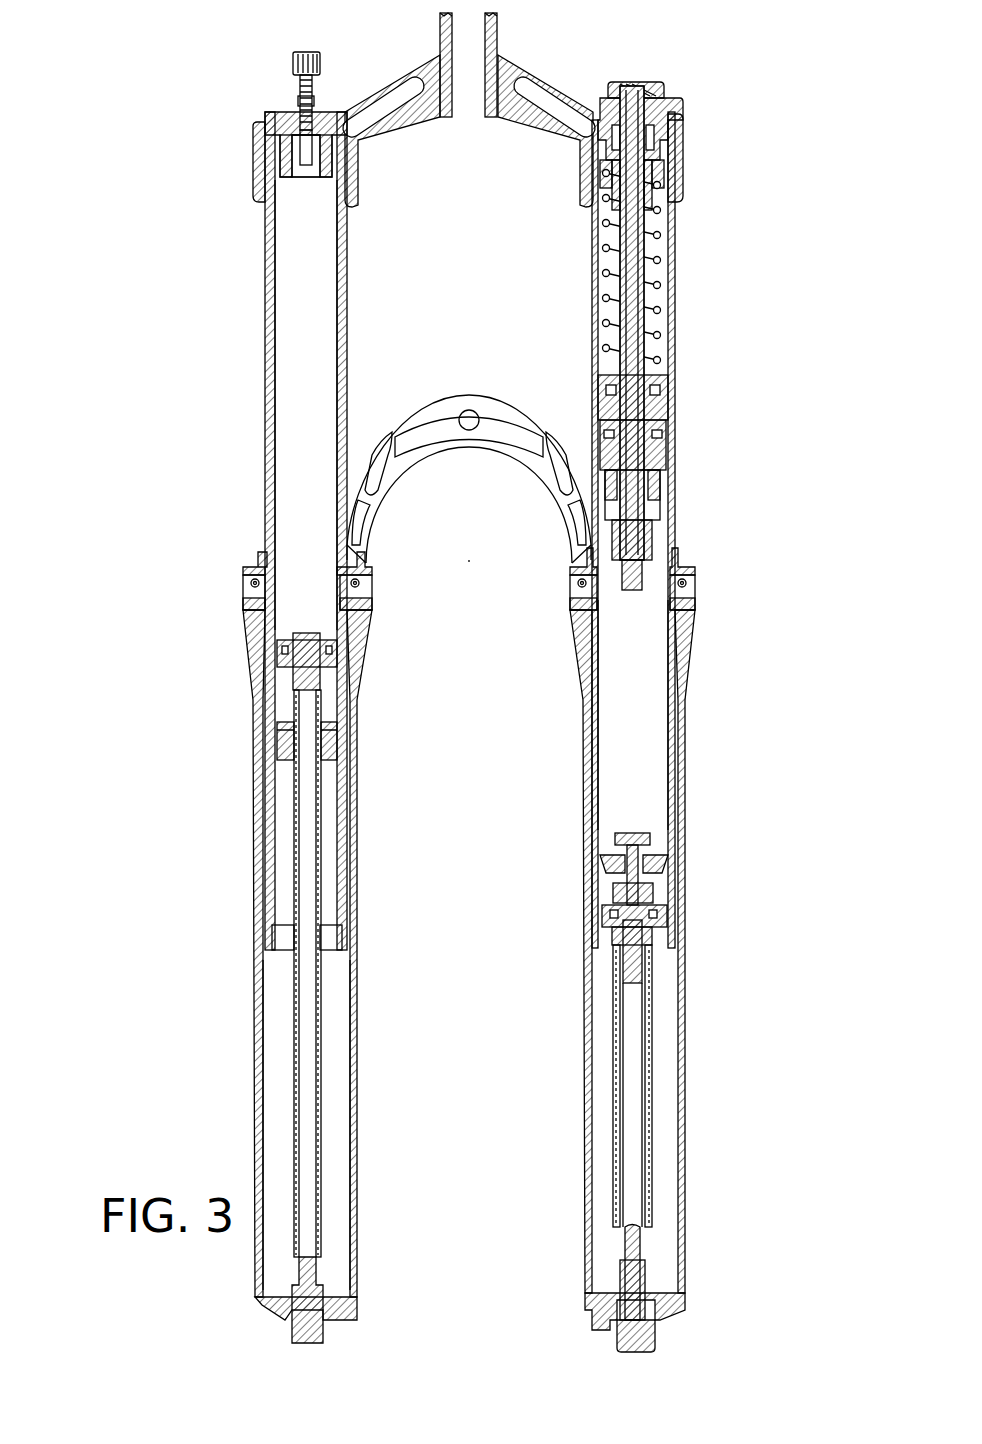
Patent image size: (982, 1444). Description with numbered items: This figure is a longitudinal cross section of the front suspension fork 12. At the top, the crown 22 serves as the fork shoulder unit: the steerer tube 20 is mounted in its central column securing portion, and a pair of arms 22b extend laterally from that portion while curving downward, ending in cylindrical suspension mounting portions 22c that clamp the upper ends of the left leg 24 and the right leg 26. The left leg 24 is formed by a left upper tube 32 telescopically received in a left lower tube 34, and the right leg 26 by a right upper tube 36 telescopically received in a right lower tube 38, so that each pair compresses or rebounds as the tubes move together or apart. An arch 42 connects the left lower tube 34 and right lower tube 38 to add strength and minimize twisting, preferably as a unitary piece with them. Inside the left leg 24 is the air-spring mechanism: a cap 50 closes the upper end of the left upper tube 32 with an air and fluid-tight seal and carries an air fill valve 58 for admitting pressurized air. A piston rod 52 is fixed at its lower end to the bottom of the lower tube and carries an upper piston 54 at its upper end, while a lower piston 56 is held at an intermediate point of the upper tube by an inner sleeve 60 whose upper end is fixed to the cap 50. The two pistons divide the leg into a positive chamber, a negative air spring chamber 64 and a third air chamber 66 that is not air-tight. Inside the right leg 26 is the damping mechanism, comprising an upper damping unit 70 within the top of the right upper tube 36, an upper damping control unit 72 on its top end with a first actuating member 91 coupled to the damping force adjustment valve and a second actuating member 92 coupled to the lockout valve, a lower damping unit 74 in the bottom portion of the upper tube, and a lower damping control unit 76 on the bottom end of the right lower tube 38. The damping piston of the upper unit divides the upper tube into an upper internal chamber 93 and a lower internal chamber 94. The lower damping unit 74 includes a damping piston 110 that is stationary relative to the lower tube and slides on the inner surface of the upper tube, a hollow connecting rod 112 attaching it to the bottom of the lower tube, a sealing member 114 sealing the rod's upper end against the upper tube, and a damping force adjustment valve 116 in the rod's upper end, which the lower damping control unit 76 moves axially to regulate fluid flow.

The suspension fork 12 is at (135, 343).
The steerer tube 20 is at (498, 26).
The crown 22 is at (560, 70).
The arms 22b is at (398, 152).
The suspension mounting portions 22c is at (258, 170).
The left leg 24 is at (165, 450).
The right leg 26 is at (747, 367).
The left upper tube 32 is at (265, 438).
The left lower tube 34 is at (255, 722).
The right upper tube 36 is at (673, 340).
The right lower tube 38 is at (683, 720).
The arch 42 is at (462, 400).
The cap 50 is at (265, 110).
The piston rod 52 is at (292, 1028).
The upper piston 54 is at (340, 640).
The lower piston 56 is at (330, 760).
The air fill valve 58 is at (292, 62).
The inner sleeve 60 is at (338, 253).
The negative air spring chamber 64 is at (293, 372).
The third air chamber 66 is at (337, 1018).
The upper damping unit 70 is at (590, 382).
The upper damping control unit 72 is at (680, 80).
The lower damping unit 74 is at (595, 870).
The lower damping control unit 76 is at (672, 1332).
The first actuating member 91 is at (655, 85).
The second actuating member 92 is at (690, 102).
The upper internal chamber 93 is at (597, 422).
The lower internal chamber 94 is at (620, 650).
The damping piston 110 is at (676, 835).
The sealing member 114 is at (648, 905).
The damping force adjustment valve 116 is at (642, 940).
The connecting rod 112 is at (655, 1085).